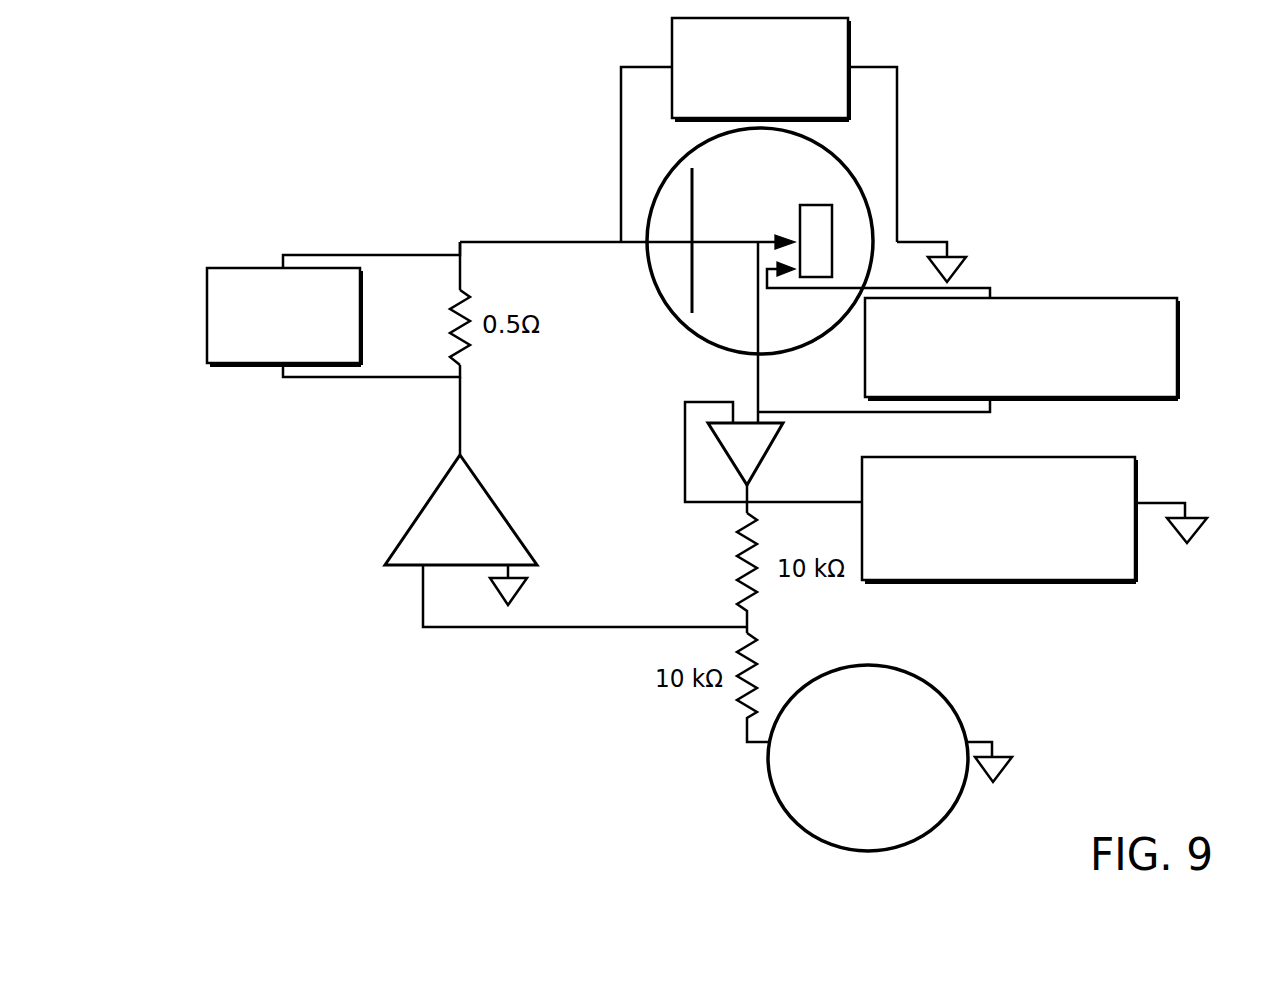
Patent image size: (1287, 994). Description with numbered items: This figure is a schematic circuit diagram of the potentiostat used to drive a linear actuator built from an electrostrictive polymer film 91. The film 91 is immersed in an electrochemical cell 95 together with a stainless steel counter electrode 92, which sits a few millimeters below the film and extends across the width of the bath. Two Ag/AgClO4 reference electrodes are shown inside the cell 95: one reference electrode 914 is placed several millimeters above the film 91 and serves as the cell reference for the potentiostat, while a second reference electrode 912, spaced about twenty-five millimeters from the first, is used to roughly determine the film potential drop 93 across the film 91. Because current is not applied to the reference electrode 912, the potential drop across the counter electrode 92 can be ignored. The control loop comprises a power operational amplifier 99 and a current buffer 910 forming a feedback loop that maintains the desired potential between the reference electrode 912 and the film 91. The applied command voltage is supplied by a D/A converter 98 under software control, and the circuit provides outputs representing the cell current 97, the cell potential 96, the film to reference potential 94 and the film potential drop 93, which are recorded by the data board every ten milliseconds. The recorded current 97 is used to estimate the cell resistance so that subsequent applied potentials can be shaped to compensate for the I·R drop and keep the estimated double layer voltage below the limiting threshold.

The film 91 is at (802, 251).
The counter electrode 92 is at (690, 192).
The film potential drop 93 is at (916, 341).
The film to reference potential 94 is at (903, 562).
The cell 95 is at (687, 328).
The cell potential 96 is at (830, 109).
The cell current 97 is at (347, 359).
The D/A converter 98 is at (882, 834).
The power operational amplifier 99 is at (413, 520).
The current buffer 910 is at (732, 463).
The second reference electrode 912 is at (798, 262).
The reference electrode 914 is at (753, 240).